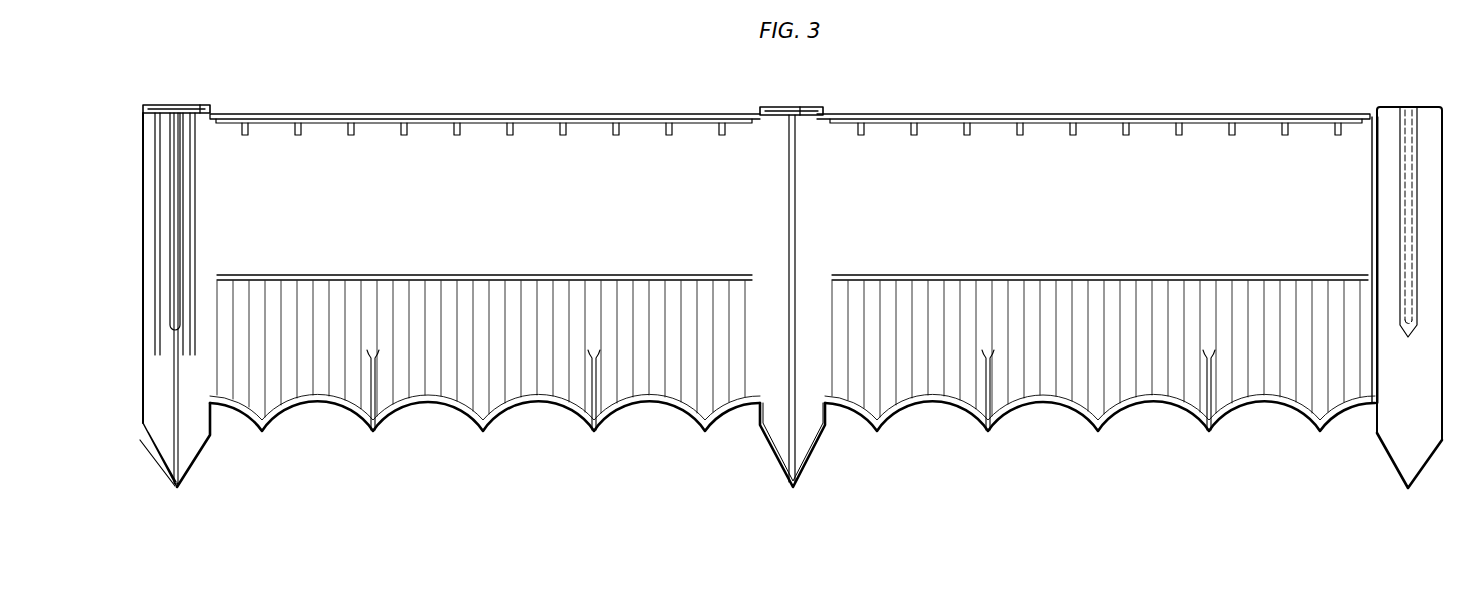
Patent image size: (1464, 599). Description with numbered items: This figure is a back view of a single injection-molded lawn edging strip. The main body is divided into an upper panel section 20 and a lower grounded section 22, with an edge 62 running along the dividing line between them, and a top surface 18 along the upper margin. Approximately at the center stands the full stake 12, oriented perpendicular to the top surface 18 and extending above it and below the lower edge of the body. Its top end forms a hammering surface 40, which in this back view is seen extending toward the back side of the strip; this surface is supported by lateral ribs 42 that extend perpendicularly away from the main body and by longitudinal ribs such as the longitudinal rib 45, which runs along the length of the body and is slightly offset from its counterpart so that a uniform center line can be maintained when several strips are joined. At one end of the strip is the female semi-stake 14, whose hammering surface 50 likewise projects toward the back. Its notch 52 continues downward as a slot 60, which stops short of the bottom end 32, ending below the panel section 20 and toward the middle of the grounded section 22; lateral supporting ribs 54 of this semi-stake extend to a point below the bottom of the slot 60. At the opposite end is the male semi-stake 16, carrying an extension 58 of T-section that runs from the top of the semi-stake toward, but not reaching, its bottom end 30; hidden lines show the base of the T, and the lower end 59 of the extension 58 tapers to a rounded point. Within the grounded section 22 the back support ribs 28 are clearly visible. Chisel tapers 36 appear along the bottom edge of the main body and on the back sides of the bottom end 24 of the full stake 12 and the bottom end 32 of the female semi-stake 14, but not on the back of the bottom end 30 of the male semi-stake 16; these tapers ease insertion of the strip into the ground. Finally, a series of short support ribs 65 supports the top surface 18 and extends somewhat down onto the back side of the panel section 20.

The full stake 12 is at (818, 130).
The female semi-stake 14 is at (143, 176).
The male semi-stake 16 is at (1441, 107).
The top surface 18 is at (436, 114).
The panel section 20 is at (676, 203).
The grounded section 22 is at (532, 376).
The bottom end of full stake 24 is at (793, 490).
The back support ribs 28 is at (373, 438).
The bottom end of male semi-stake 30 is at (1408, 491).
The bottom end of female semi-stake 32 is at (177, 491).
The chisel tapers 36 is at (198, 466).
The hammering surface 40 is at (783, 107).
The lateral ribs 42 is at (796, 208).
The longitudinal rib 45 is at (160, 455).
The hammering surface of female semi-stake 50 is at (150, 105).
The notch 52 is at (177, 105).
The lateral supporting ribs 54 is at (157, 214).
The extension 58 is at (1400, 108).
The lower end of extension 59 is at (1408, 339).
The slot 60 is at (178, 248).
The edge 62 is at (608, 275).
The short support ribs 65 is at (298, 136).